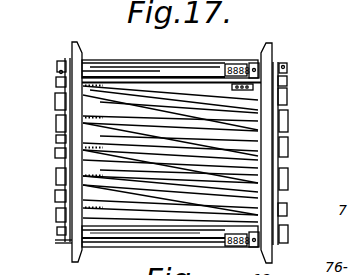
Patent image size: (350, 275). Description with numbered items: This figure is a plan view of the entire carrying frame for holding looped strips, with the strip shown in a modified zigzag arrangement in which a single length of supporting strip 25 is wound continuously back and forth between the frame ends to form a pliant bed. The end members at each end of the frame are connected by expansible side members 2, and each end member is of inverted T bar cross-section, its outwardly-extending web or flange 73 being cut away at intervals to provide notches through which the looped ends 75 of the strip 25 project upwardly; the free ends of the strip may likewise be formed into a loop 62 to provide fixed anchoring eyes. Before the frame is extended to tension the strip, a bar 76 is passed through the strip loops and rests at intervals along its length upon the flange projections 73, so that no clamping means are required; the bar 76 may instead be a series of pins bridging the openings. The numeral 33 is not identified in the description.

The expansible side members 2 is at (118, 128).
The supporting strip 25 is at (110, 96).
The side plate 33 is at (70, 189).
The loop 62 is at (286, 85).
The web or flange 73 is at (288, 121).
The looped ends 75 is at (58, 149).
The bar 76 is at (63, 73).